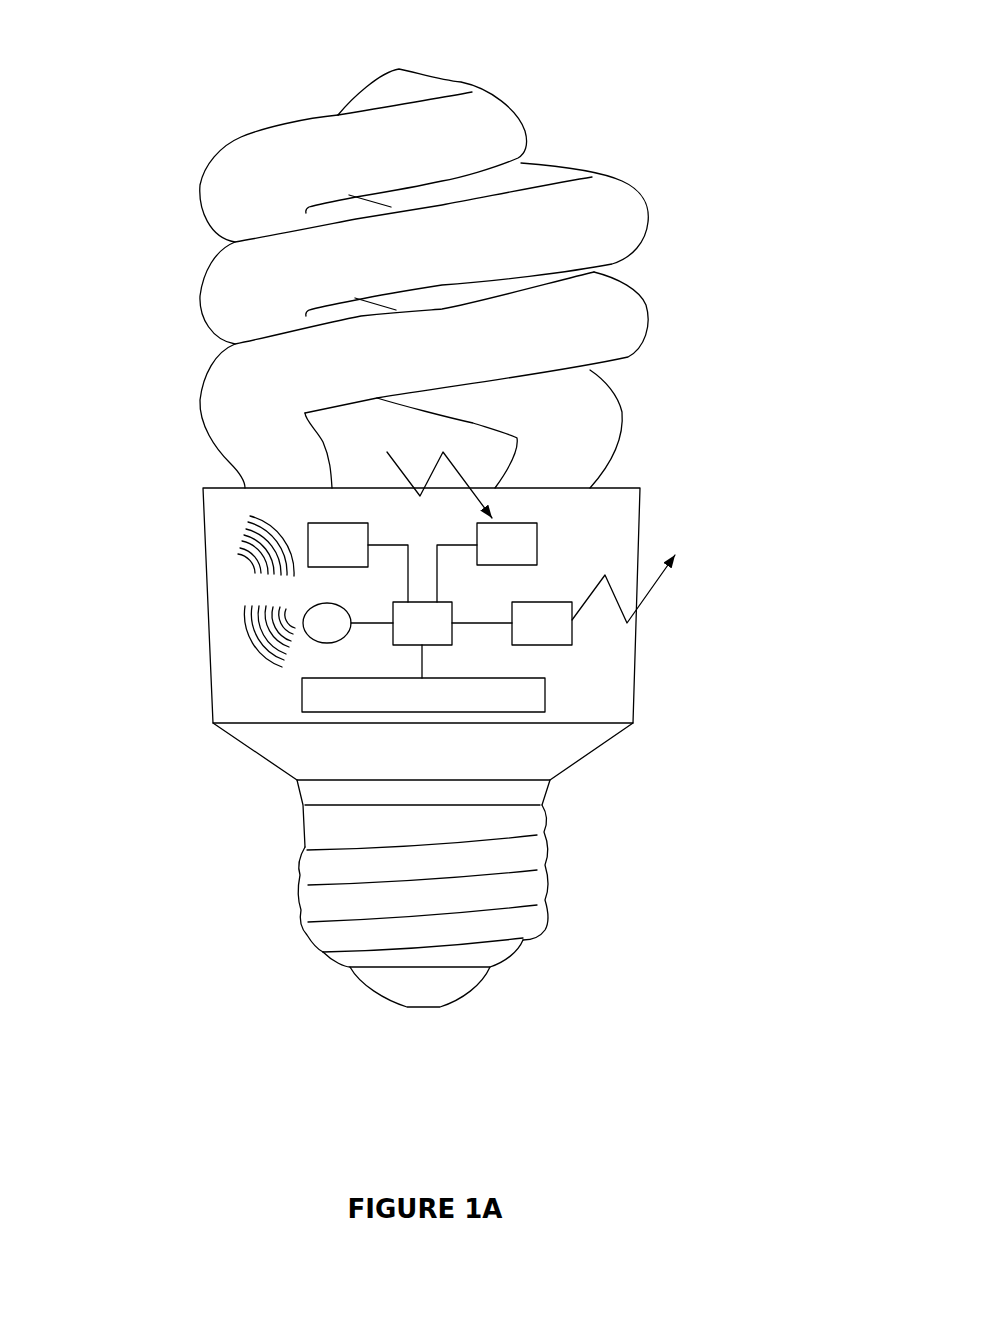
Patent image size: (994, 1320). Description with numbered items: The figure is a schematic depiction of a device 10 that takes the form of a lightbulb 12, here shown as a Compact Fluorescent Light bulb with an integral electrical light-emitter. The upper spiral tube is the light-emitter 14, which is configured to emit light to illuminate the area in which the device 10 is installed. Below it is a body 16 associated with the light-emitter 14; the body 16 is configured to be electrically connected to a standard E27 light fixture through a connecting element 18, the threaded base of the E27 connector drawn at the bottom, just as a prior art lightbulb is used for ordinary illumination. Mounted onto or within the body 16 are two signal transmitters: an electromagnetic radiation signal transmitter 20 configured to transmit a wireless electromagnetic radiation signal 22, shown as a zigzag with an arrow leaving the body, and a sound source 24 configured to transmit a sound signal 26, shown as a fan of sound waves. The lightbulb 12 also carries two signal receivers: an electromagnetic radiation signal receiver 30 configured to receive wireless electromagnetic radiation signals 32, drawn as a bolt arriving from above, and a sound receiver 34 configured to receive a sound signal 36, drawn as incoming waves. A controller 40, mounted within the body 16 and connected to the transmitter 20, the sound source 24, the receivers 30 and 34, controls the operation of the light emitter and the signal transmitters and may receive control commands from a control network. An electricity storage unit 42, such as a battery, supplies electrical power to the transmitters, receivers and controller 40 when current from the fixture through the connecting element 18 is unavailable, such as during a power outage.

The device 10 is at (693, 95).
The lightbulb 12 is at (207, 556).
The light-emitter 14 is at (201, 294).
The body 16 is at (236, 704).
The connecting element 18 is at (300, 897).
The electromagnetic radiation signal transmitter 20 is at (542, 623).
The wireless electromagnetic radiation signal 22 is at (647, 593).
The sound source 24 is at (348, 623).
The sound signal 26 is at (247, 638).
The electromagnetic radiation signal receiver 30 is at (487, 562).
The wireless electromagnetic radiation signals 32 is at (395, 463).
The sound receiver 34 is at (358, 562).
The sound signal 36 is at (237, 544).
The controller 40 is at (452, 640).
The electricity storage unit 42 is at (423, 695).